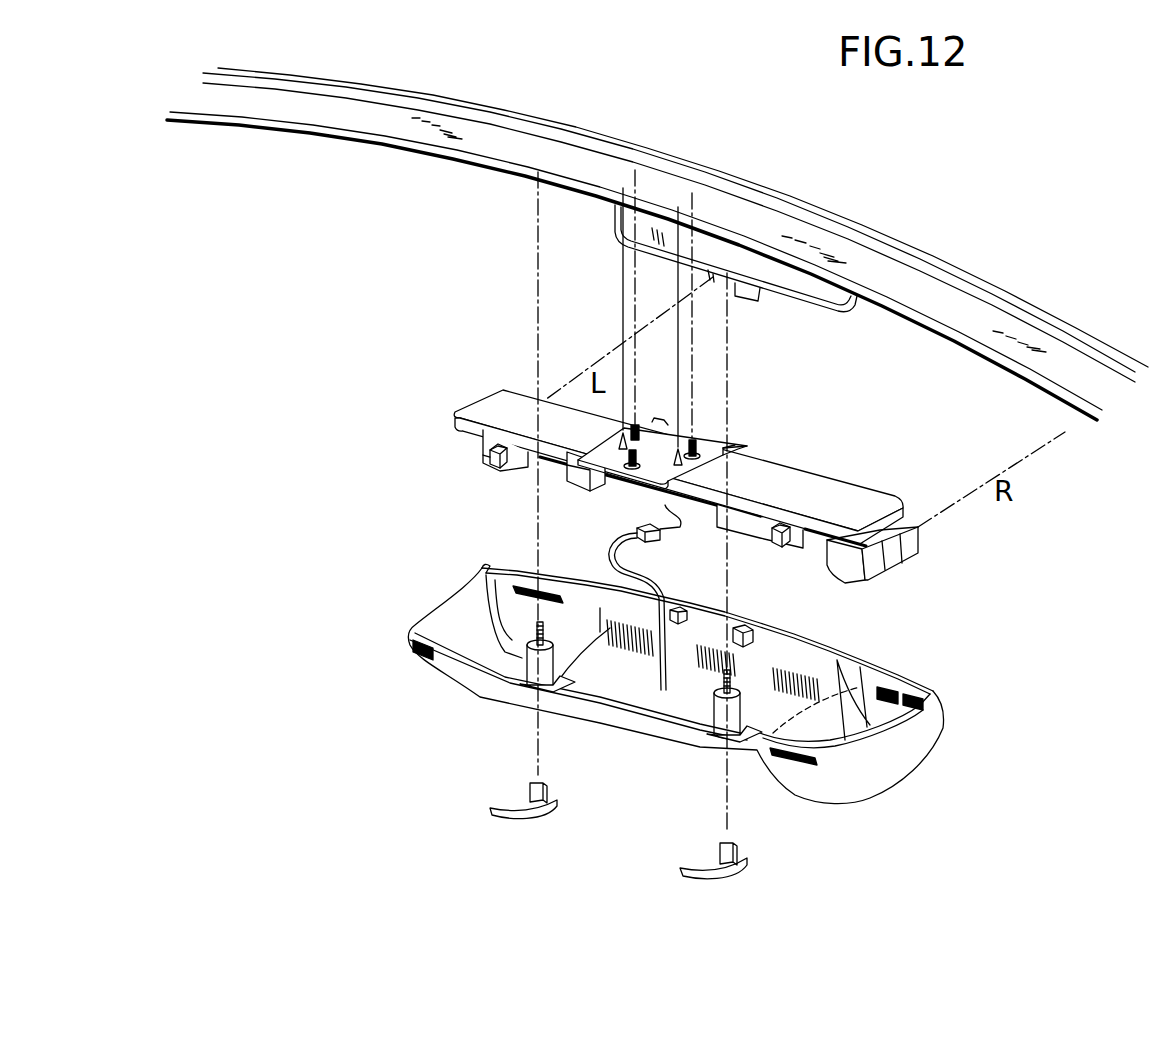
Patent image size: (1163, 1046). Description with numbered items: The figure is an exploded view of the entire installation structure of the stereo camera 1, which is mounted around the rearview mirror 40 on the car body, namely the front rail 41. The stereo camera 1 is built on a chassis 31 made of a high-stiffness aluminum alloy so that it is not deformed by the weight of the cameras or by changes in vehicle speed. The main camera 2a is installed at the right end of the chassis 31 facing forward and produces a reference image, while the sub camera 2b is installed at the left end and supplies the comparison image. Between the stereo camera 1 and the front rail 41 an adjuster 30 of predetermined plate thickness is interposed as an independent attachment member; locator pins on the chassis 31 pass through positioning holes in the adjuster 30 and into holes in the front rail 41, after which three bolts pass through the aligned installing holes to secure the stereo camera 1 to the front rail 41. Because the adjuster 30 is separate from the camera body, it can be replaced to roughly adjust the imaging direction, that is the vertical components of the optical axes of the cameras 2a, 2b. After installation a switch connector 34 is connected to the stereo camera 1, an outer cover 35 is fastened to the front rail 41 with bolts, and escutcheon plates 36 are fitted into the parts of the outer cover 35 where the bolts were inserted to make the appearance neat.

The front rail 41 is at (598, 157).
The rearview mirror 40 is at (821, 292).
The chassis 31 is at (835, 492).
The adjuster 30 is at (742, 446).
The stereo camera 1 is at (748, 538).
The sub camera 2b is at (472, 447).
The main camera 2a is at (888, 562).
The switch connector 34 is at (647, 546).
The outer cover 35 is at (905, 766).
The escutcheon plates 36 is at (510, 808).